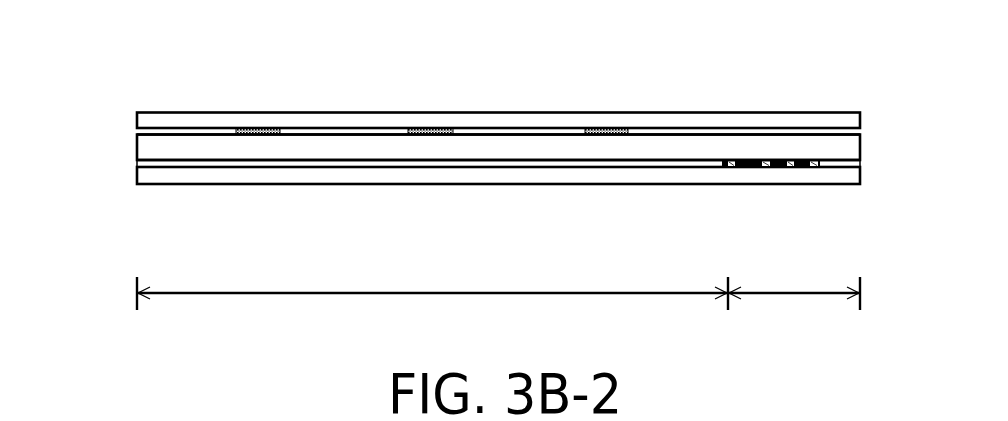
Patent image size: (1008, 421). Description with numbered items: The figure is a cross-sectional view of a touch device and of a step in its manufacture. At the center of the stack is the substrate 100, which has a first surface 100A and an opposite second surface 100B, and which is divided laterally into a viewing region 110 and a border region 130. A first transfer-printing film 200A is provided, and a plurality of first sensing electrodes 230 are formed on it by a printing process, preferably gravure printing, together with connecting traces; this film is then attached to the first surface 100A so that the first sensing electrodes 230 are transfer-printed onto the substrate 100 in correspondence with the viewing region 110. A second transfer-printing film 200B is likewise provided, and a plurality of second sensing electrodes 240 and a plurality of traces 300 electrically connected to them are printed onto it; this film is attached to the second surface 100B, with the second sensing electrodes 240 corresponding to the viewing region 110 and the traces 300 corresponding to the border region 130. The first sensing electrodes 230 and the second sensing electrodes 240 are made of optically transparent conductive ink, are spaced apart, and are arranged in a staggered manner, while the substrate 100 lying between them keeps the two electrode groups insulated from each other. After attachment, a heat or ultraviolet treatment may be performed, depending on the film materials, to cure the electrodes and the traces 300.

The substrate 100 is at (135, 153).
The first surface 100A is at (710, 133).
The second surface 100B is at (713, 168).
The viewing region 110 is at (432, 281).
The border region 130 is at (794, 281).
The first transfer-printing film 200A is at (653, 113).
The second transfer-printing film 200B is at (608, 184).
The first sensing electrodes 230 is at (256, 128).
The second sensing electrodes 240 is at (184, 165).
The traces 300 is at (817, 169).